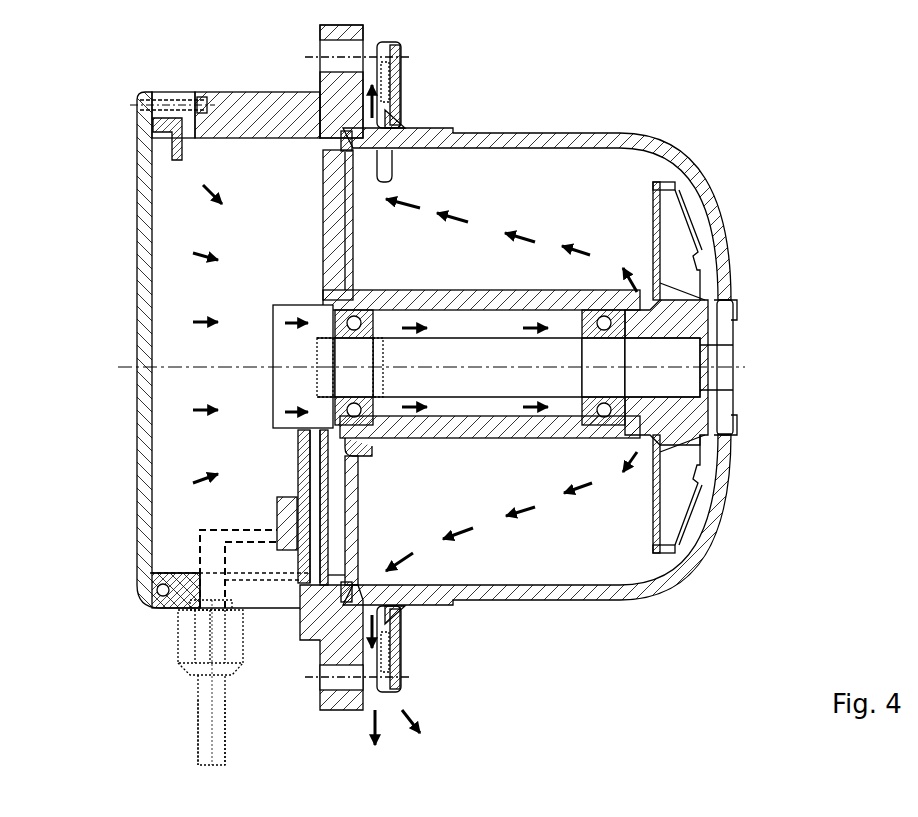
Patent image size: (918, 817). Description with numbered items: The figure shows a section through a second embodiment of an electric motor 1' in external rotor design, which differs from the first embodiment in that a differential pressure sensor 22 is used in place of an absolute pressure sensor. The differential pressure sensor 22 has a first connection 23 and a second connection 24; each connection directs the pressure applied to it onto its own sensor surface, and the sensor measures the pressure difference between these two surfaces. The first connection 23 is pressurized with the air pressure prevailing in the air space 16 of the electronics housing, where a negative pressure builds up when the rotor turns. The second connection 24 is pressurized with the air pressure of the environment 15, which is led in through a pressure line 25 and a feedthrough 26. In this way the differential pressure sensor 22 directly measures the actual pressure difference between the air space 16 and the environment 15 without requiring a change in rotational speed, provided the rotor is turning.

The electric motor 1' is at (386, 385).
The air space 16 is at (205, 222).
The differential pressure sensor 22 is at (290, 498).
The first connection 23 is at (279, 498).
The second connection 24 is at (275, 548).
The pressure line 25 is at (203, 532).
The feedthrough 26 is at (197, 633).
The environment 15 is at (112, 743).